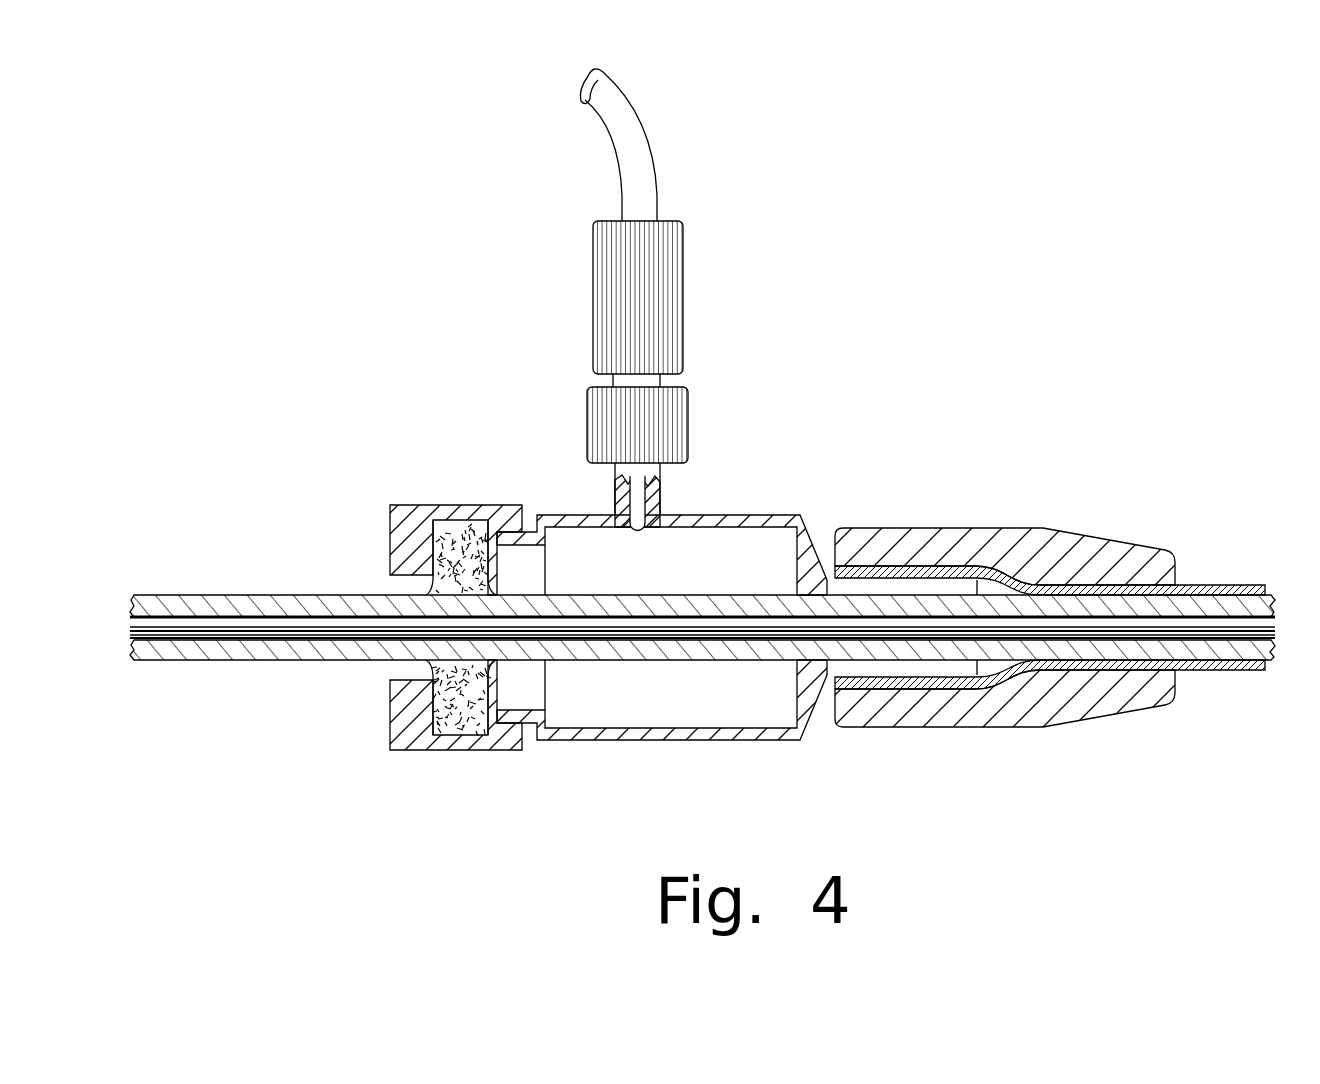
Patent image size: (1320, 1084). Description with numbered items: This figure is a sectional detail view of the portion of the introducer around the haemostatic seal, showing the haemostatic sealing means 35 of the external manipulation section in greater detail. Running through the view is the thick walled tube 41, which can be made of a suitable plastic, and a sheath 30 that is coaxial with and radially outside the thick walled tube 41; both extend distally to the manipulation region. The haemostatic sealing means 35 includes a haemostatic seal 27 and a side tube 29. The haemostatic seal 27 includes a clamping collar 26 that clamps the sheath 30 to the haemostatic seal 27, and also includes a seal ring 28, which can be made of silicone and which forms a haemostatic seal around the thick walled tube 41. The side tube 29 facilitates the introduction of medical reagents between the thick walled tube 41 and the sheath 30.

The clamping collar 26 is at (923, 533).
The haemostatic seal 27 is at (630, 741).
The seal ring 28 is at (453, 749).
The side tube 29 is at (646, 159).
The sheath 30 is at (1213, 590).
The haemostatic sealing means 35 is at (818, 460).
The thick walled tube 41 is at (302, 641).